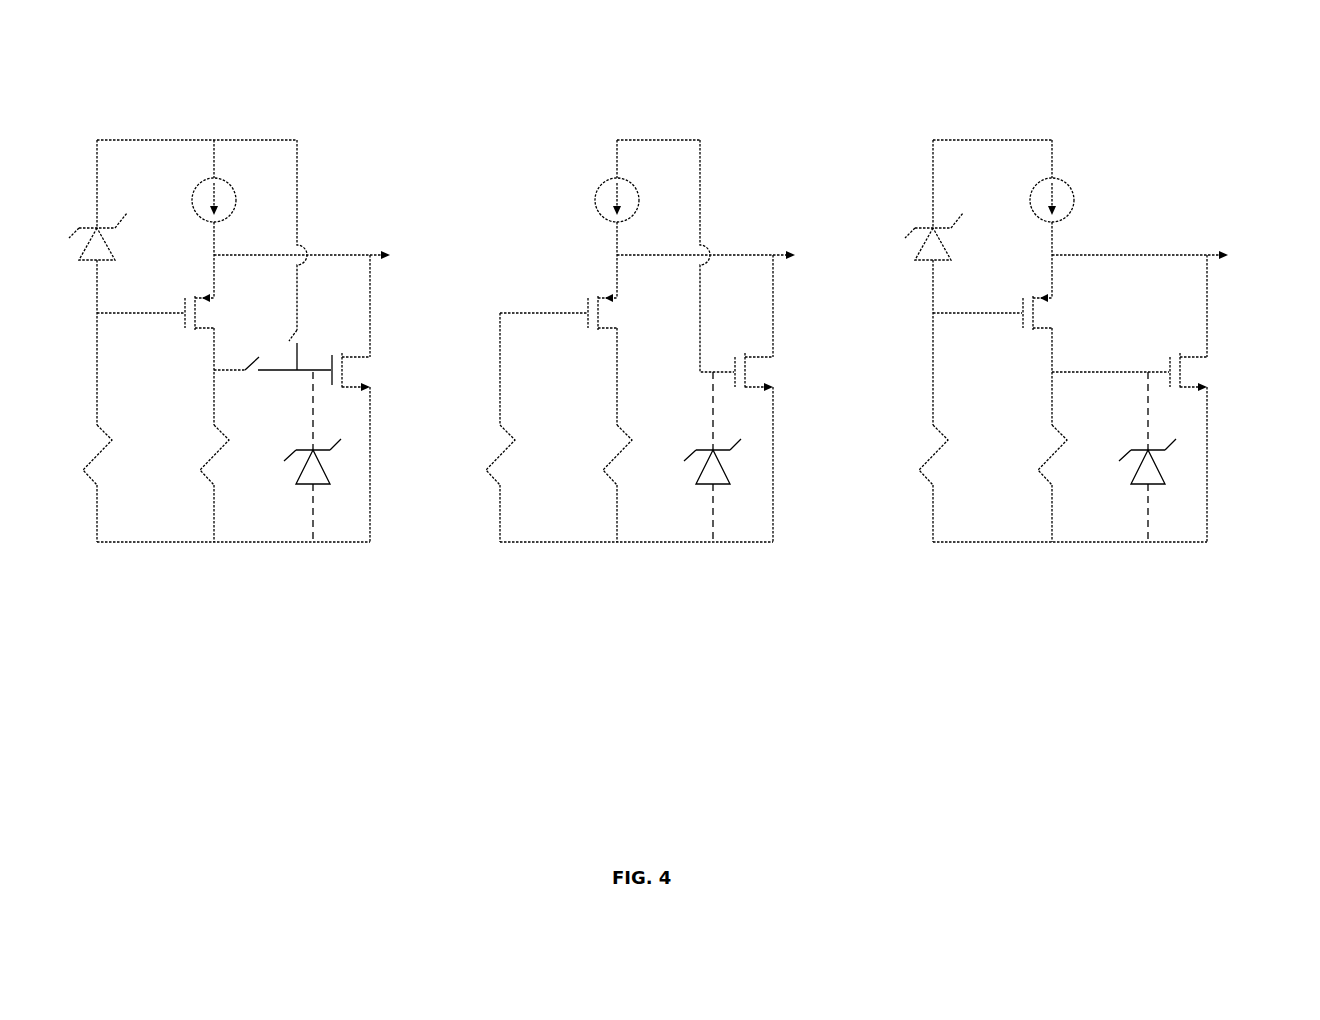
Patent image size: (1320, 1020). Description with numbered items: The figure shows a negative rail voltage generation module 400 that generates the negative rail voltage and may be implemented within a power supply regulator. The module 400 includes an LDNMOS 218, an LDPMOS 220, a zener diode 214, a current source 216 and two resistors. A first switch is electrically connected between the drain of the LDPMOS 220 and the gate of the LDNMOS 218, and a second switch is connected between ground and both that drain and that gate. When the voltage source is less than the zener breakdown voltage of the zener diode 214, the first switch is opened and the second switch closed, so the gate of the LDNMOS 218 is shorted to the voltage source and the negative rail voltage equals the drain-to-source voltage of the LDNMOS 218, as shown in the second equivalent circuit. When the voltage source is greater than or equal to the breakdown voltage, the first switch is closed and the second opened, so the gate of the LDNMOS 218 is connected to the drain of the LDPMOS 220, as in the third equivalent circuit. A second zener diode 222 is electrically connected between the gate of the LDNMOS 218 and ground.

The negative rail voltage generation module 400 is at (1285, 83).
The zener diode 214 is at (501, 239).
The current source 216 is at (654, 191).
The LDNMOS 218 is at (812, 362).
The LDPMOS 220 is at (649, 305).
The second zener diode 222 is at (741, 457).